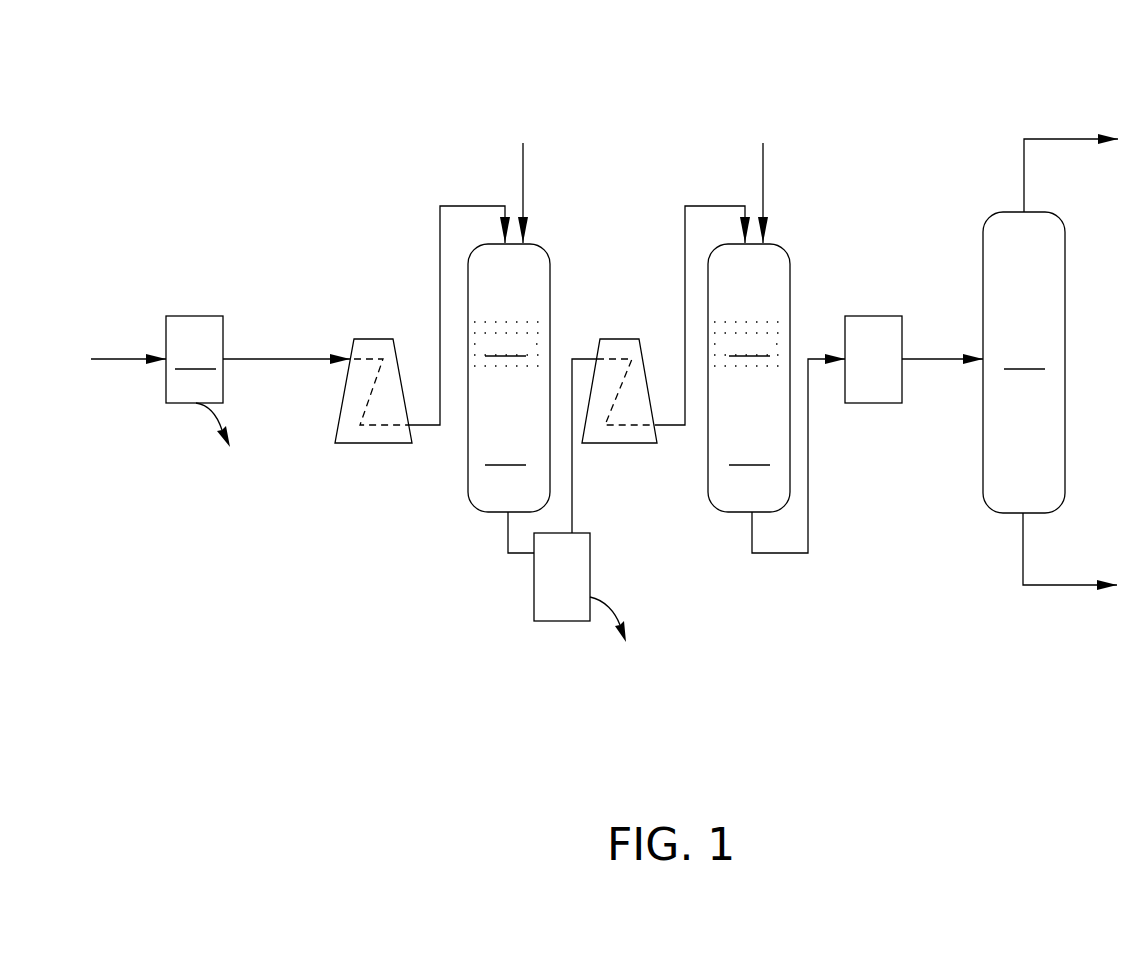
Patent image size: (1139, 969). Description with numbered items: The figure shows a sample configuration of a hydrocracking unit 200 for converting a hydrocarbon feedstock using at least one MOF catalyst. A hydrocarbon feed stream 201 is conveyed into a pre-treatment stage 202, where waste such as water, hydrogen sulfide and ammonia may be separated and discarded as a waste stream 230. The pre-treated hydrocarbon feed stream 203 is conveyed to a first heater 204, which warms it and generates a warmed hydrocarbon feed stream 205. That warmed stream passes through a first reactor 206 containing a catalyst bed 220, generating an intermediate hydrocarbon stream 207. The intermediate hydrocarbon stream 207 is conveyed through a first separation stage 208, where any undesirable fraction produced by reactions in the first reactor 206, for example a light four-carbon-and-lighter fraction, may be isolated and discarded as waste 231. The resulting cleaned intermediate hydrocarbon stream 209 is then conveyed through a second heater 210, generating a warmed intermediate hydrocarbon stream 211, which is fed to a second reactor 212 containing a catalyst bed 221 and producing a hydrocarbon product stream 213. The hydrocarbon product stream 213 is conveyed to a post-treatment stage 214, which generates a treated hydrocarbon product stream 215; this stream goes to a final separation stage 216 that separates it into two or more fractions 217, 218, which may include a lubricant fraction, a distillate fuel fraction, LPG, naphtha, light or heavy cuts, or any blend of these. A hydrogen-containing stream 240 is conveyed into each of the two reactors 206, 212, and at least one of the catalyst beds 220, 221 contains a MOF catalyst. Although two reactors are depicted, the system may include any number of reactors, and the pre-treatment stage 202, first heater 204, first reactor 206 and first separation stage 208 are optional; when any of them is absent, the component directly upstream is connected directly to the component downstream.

The hydrocracking unit 200 is at (587, 59).
The hydrocarbon feed stream 201 is at (124, 362).
The pre-treatment stage 202 is at (194, 359).
The pre-treated hydrocarbon feed stream 203 is at (292, 358).
The first heater 204 is at (398, 430).
The warmed hydrocarbon feed stream 205 is at (440, 220).
The first reactor 206 is at (509, 378).
The intermediate hydrocarbon stream 207 is at (508, 525).
The first separation stage 208 is at (534, 585).
The cleaned intermediate hydrocarbon stream 209 is at (572, 495).
The second heater 210 is at (625, 435).
The warmed intermediate hydrocarbon stream 211 is at (685, 215).
The second reactor 212 is at (749, 378).
The hydrocarbon product stream 213 is at (785, 555).
The post-treatment stage 214 is at (875, 316).
The treated hydrocarbon product stream 215 is at (940, 359).
The final separation stage 216 is at (1024, 362).
The fraction 217 is at (1033, 588).
The fraction 218 is at (1057, 139).
The catalyst bed 220 is at (510, 344).
The catalyst bed 221 is at (750, 344).
The waste stream 230 is at (209, 405).
The waste 231 is at (605, 603).
The hydrogen-containing stream 240 is at (762, 170).